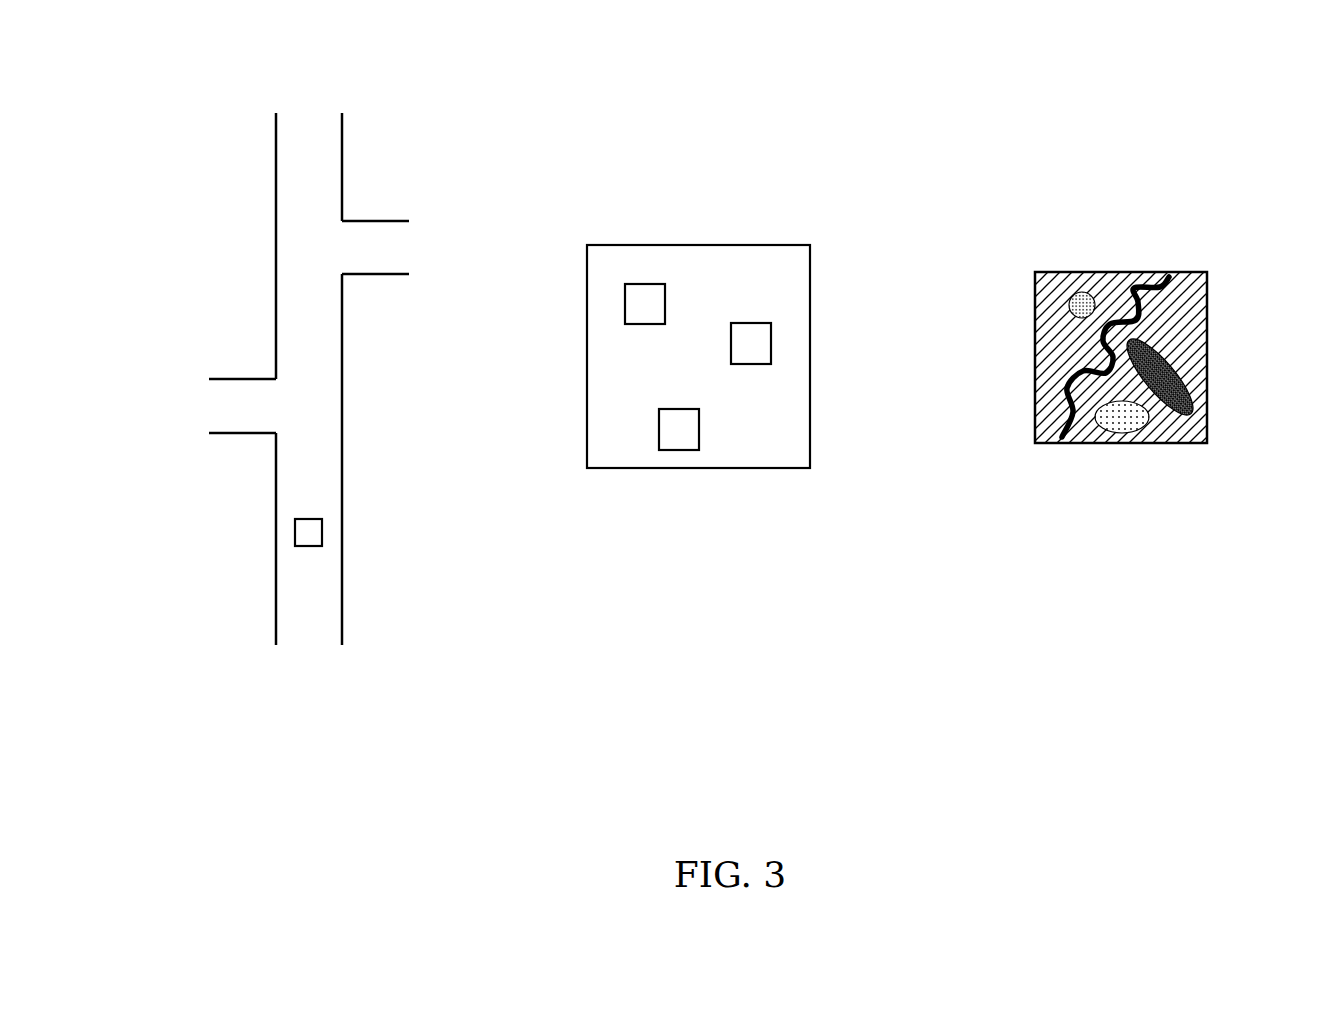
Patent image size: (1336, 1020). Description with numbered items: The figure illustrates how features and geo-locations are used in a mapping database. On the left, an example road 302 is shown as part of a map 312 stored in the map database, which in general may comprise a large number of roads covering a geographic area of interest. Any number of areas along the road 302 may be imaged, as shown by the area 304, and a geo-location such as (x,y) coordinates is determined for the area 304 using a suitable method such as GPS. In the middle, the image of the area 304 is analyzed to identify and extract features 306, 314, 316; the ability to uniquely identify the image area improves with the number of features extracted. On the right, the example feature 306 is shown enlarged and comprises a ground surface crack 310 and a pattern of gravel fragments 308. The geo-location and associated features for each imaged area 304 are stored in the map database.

The road 302 is at (275, 307).
The area 304 is at (295, 532).
The feature 306 is at (625, 303).
The pattern of gravel fragments 308 is at (1073, 308).
The ground surface crack 310 is at (1060, 425).
The map 312 is at (236, 128).
The feature 314 is at (771, 343).
The feature 316 is at (659, 435).